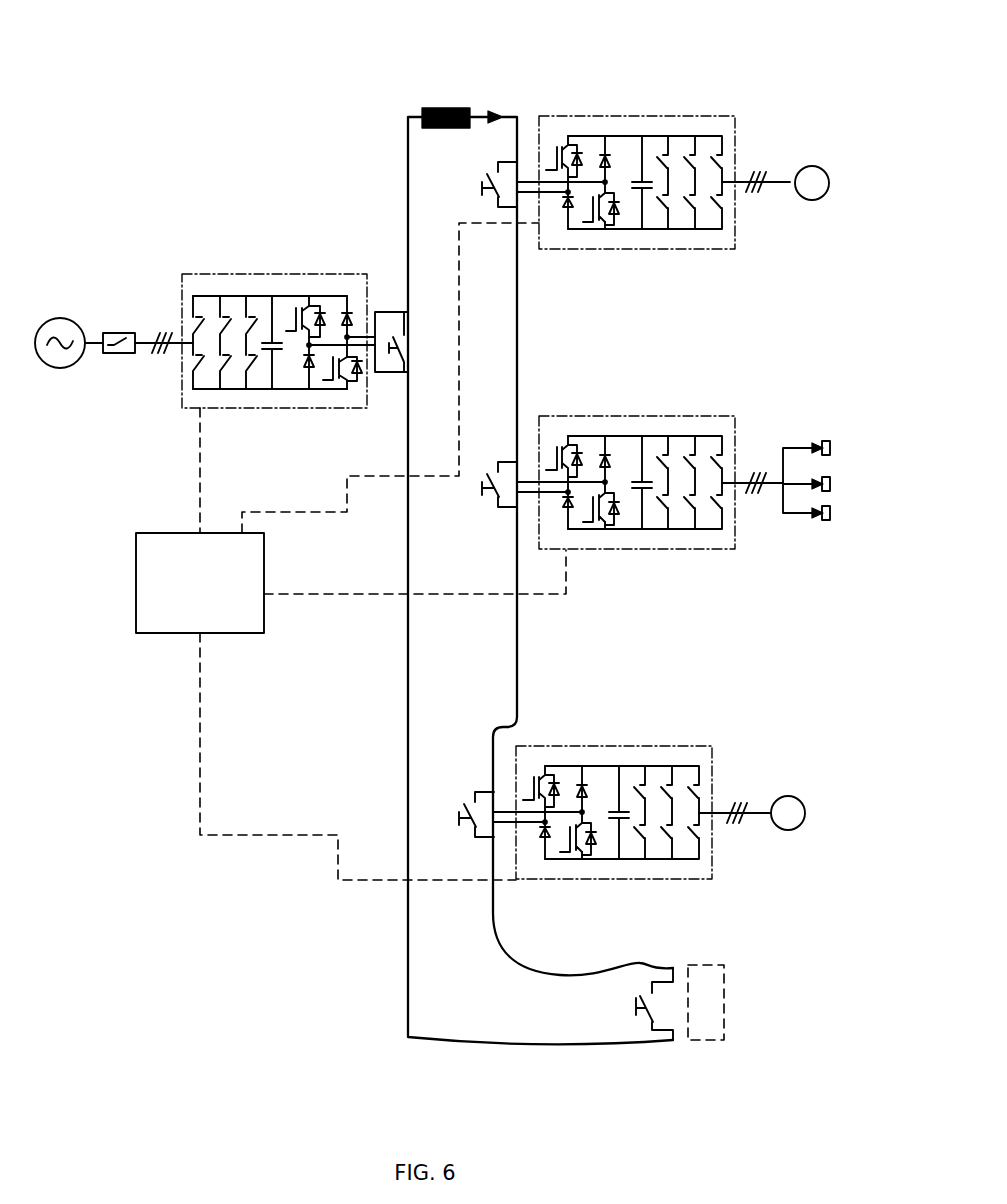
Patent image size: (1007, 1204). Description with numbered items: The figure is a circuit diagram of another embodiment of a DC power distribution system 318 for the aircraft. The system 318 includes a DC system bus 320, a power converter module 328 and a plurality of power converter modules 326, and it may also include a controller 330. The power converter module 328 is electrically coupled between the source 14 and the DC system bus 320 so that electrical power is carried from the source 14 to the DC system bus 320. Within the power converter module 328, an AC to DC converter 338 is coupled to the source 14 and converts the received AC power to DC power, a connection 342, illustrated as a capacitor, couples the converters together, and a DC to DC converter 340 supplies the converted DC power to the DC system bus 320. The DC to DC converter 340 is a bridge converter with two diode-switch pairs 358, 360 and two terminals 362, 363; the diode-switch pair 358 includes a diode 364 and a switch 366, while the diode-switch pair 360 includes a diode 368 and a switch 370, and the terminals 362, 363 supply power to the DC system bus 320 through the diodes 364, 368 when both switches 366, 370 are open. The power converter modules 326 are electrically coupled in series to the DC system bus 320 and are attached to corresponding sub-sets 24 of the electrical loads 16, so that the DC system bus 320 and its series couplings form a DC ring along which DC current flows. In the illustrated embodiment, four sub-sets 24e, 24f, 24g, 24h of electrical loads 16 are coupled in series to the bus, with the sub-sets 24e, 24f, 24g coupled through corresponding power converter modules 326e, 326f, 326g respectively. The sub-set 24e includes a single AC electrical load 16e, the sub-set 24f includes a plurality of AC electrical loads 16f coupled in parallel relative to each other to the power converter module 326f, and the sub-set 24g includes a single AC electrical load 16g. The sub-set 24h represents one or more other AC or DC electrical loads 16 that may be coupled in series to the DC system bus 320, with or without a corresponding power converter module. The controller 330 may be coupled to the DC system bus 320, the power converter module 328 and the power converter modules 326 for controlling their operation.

The DC power distribution system 318 is at (291, 72).
The source 14 is at (62, 318).
The electrical loads 16 is at (782, 583).
The electrical load 16e is at (826, 170).
The electrical loads 16f is at (833, 445).
The electrical load 16g is at (804, 798).
The sub-sets of electrical loads 24 is at (641, 613).
The sub-set 24e is at (804, 162).
The sub-set 24f is at (793, 439).
The sub-set 24g is at (781, 794).
The sub-set 24h is at (696, 1048).
The DC system bus 320 is at (404, 533).
The power converter modules 326 is at (669, 253).
The power converter module 326e is at (685, 113).
The power converter module 326f is at (685, 413).
The power converter module 326g is at (594, 884).
The power converter module 328 is at (245, 412).
The controller 330 is at (183, 596).
The AC to DC converter 338 is at (240, 294).
The DC to DC converter 340 is at (339, 286).
The connection 342 is at (281, 352).
The diode-switch pair 358 is at (331, 412).
The diode-switch pair 360 is at (309, 399).
The terminal 362 is at (377, 312).
The terminal 363 is at (306, 341).
The diode 364 is at (348, 335).
The switch 366 is at (365, 402).
The diode 368 is at (312, 350).
The switch 370 is at (298, 290).